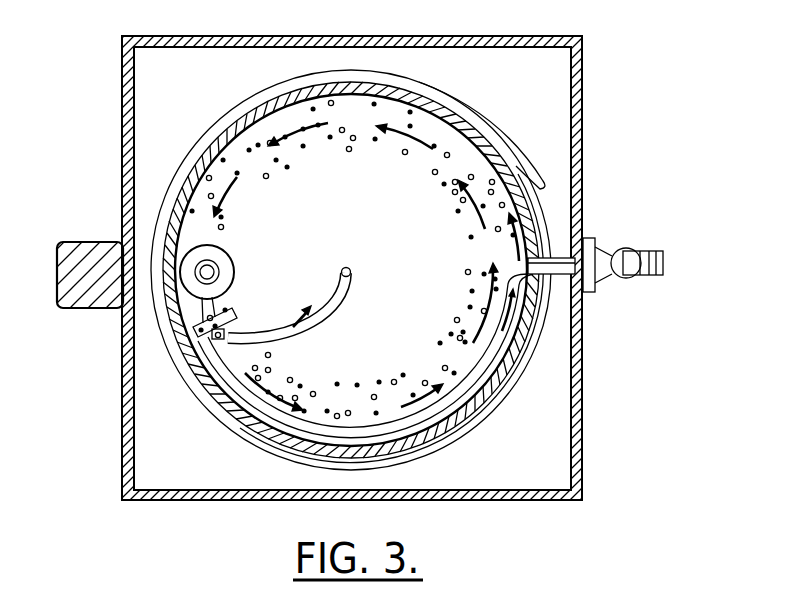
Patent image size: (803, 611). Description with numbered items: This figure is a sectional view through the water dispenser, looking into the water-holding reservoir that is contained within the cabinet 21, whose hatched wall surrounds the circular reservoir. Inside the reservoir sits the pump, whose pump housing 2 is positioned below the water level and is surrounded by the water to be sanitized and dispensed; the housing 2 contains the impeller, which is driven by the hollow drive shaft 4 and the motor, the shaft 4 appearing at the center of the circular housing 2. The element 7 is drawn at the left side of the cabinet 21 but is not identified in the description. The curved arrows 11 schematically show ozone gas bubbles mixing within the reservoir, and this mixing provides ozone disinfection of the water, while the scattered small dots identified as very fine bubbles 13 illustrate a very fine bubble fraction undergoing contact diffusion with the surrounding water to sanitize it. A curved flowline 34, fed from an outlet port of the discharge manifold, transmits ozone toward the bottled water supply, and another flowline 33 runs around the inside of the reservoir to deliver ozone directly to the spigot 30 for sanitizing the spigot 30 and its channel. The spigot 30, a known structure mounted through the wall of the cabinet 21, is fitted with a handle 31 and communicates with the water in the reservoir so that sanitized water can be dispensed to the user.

The pump housing 2 is at (231, 252).
The hollow drive shaft 4 is at (219, 272).
The shaft 7 is at (57, 290).
The arrows 11 is at (227, 187).
The very fine bubbles 13 is at (422, 152).
The cabinet 21 is at (122, 472).
The spigot 30 is at (606, 285).
The handle 31 is at (650, 248).
The flowline 33 is at (455, 398).
The flowline 34 is at (342, 288).